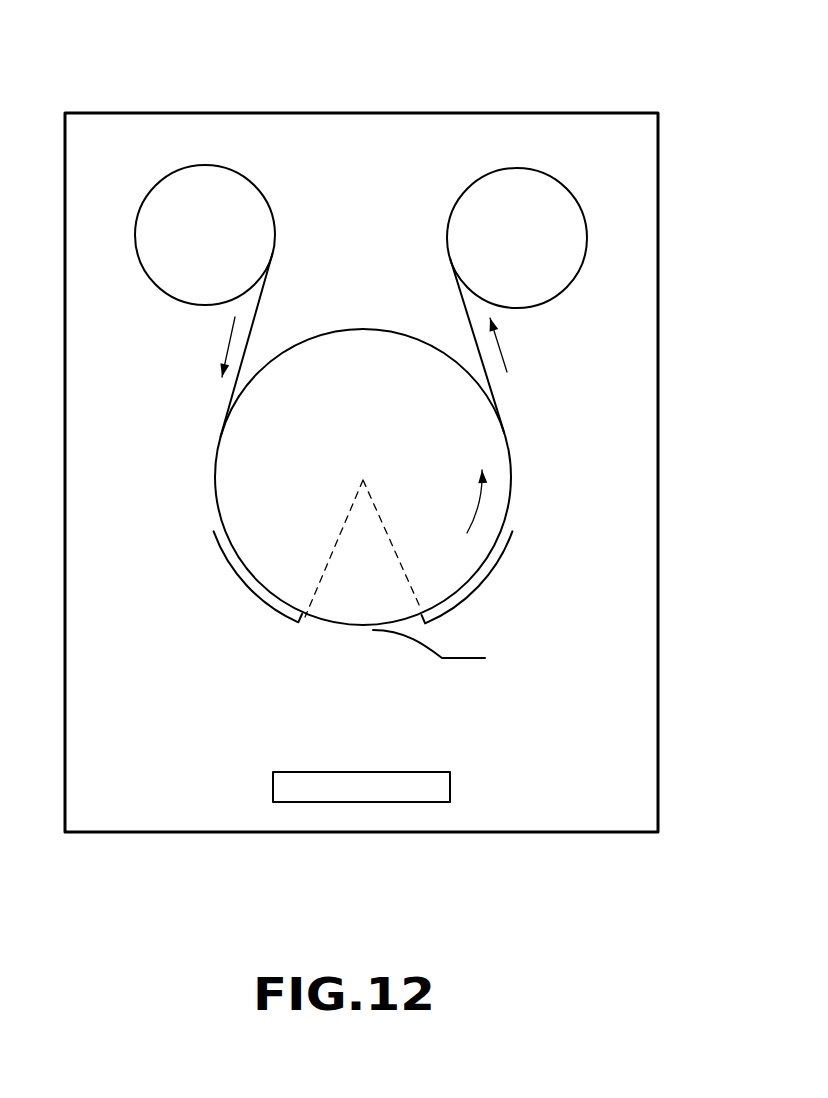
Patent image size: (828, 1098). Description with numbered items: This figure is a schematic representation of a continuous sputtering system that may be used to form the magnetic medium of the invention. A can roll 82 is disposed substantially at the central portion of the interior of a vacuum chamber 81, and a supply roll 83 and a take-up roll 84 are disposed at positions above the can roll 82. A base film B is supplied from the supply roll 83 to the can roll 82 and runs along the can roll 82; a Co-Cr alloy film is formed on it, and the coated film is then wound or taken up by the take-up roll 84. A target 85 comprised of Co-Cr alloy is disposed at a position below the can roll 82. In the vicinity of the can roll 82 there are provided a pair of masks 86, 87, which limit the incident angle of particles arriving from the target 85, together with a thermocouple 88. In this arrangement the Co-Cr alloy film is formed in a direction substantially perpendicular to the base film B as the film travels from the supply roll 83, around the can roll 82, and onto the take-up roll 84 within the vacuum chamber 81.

The vacuum chamber 81 is at (540, 106).
The can roll 82 is at (387, 347).
The supply roll 83 is at (255, 200).
The take-up roll 84 is at (565, 207).
The target 85 is at (297, 785).
The mask 86 is at (253, 595).
The mask 87 is at (480, 590).
The thermocouple 88 is at (443, 663).
The base film B is at (270, 292).